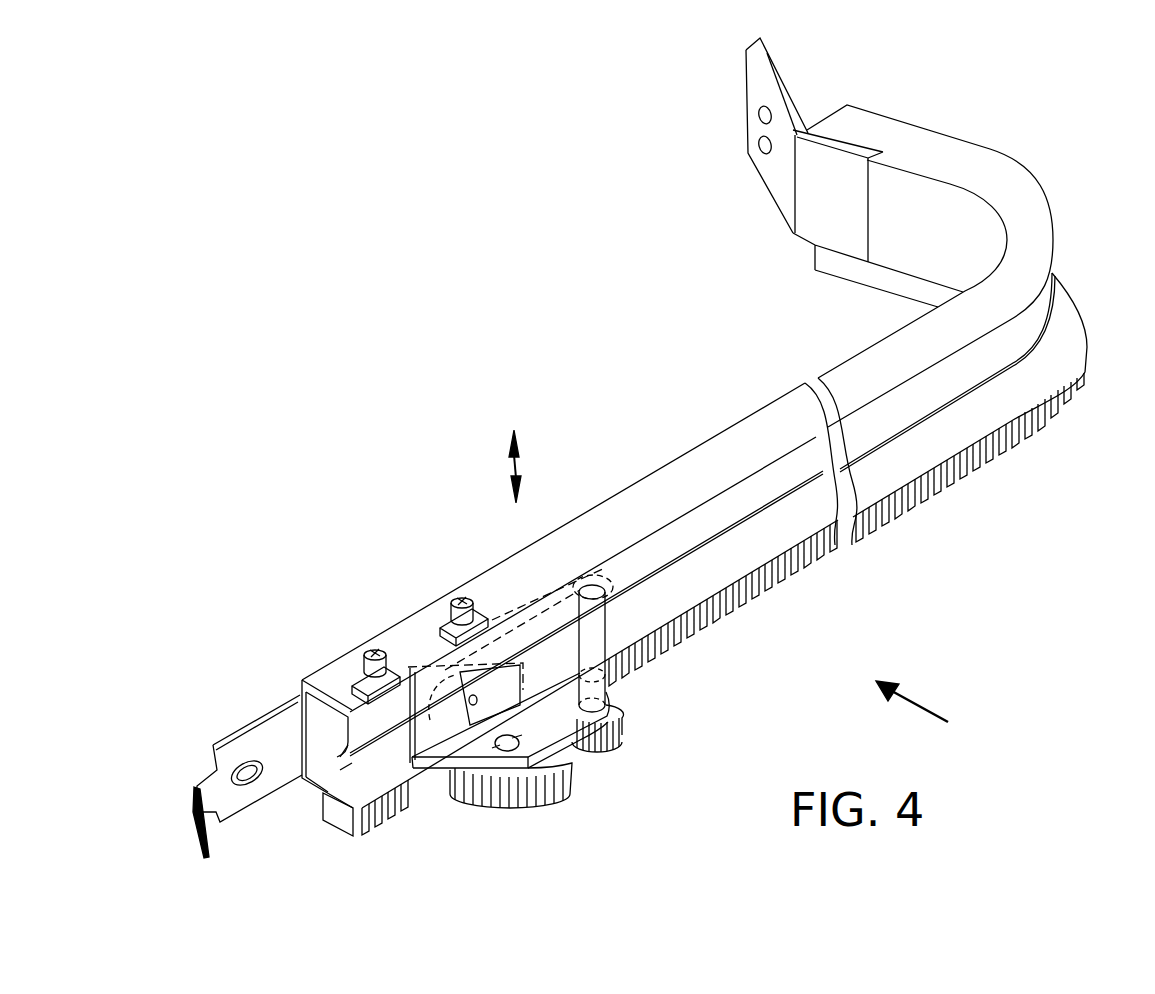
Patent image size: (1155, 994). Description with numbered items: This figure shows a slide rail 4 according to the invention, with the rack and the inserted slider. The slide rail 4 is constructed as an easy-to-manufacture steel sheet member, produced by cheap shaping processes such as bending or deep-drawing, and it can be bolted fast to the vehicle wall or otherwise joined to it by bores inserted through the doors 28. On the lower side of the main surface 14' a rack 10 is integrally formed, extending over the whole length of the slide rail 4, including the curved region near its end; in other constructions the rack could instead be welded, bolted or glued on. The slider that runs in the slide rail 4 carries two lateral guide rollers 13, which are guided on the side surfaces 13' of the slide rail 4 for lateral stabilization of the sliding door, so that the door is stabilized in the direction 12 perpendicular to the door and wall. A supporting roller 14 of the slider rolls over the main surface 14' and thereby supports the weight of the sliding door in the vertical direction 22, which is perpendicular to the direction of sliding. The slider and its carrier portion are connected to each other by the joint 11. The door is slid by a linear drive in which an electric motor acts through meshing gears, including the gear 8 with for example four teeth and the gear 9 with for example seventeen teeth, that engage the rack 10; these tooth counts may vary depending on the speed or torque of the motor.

The slide rail 4 is at (720, 455).
The gear 8 is at (612, 748).
The gear 9 is at (543, 790).
The rack 10 is at (793, 597).
The joint 11 is at (606, 693).
The direction perpendicular to the sliding door 12 is at (936, 706).
The guide rollers 13 is at (420, 624).
The side surfaces 13' is at (284, 700).
The supporting roller 14 is at (506, 769).
The main surface 14' is at (307, 820).
The vertical direction 22 is at (517, 463).
The doors 28 is at (748, 149).